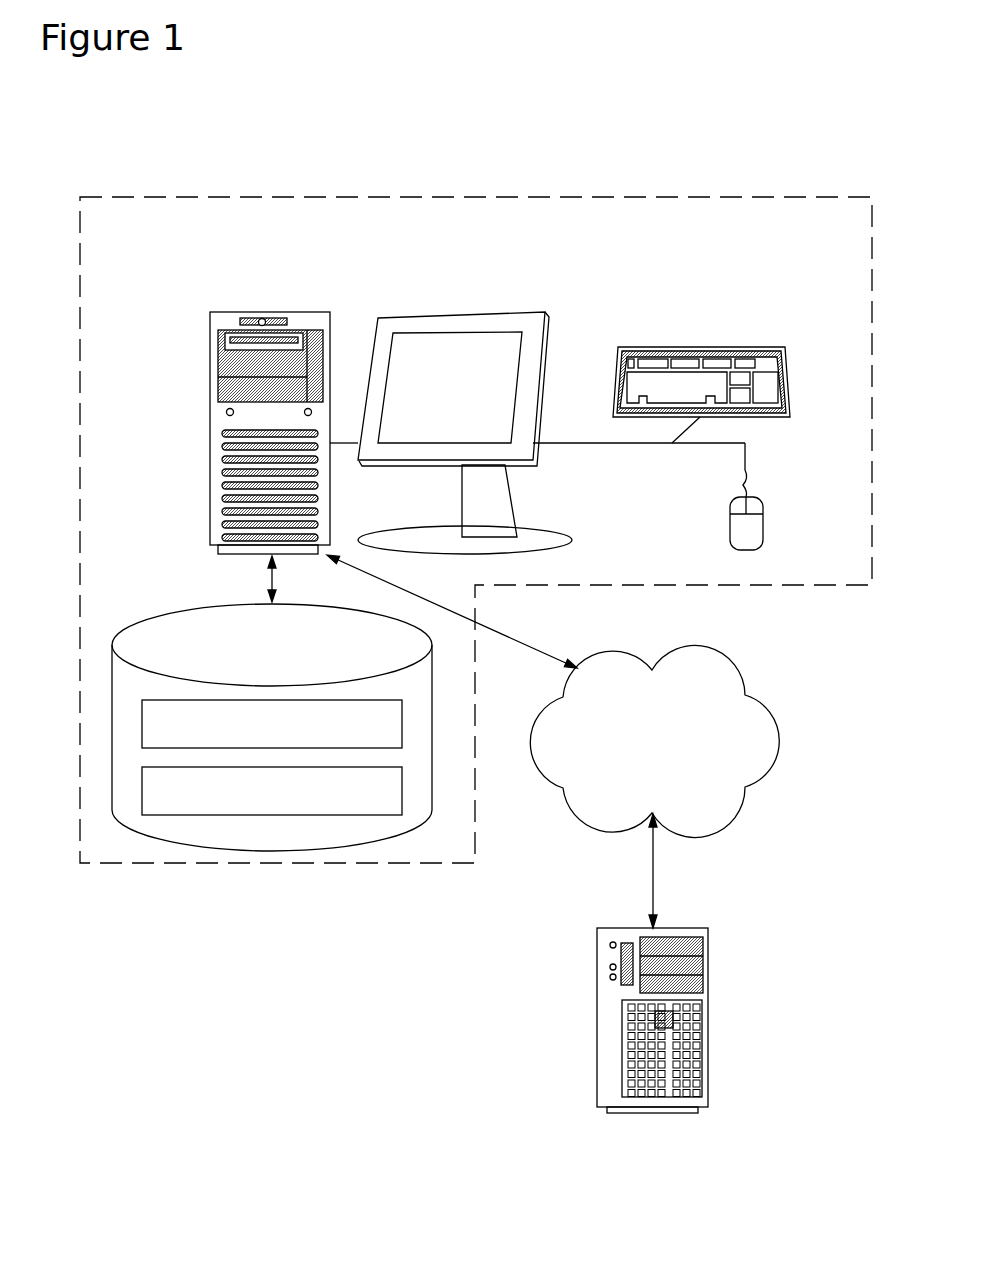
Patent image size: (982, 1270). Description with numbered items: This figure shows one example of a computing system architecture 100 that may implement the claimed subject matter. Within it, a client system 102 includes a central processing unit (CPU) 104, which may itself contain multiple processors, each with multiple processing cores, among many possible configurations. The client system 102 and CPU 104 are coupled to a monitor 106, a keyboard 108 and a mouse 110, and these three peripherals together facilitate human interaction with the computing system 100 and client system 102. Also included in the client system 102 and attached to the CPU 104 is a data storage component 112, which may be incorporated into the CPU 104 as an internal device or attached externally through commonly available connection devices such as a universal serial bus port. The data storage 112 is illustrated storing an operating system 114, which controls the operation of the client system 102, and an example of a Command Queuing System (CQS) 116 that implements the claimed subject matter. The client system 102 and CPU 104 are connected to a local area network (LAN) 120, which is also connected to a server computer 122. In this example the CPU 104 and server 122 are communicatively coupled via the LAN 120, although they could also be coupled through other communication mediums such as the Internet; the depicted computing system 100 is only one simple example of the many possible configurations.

The computing system architecture 100 is at (460, 172).
The client system 102 is at (135, 283).
The central processing unit (CPU) 104 is at (287, 312).
The monitor 106 is at (540, 385).
The keyboard 108 is at (760, 360).
The mouse 110 is at (733, 560).
The data storage component 112 is at (257, 671).
The operating system 114 is at (305, 736).
The Command Queuing System (CQS) 116 is at (312, 803).
The local area network (LAN) 120 is at (637, 766).
The server computer 122 is at (708, 1018).